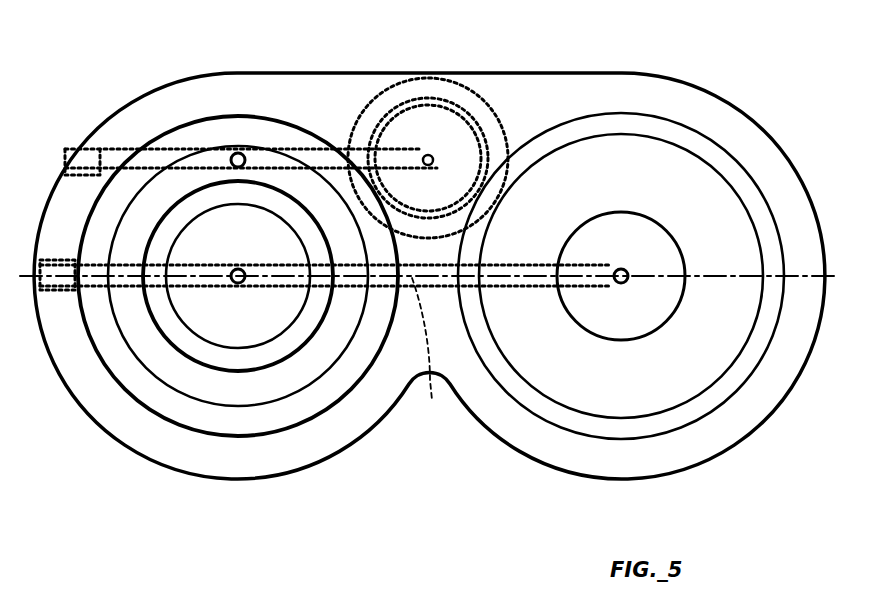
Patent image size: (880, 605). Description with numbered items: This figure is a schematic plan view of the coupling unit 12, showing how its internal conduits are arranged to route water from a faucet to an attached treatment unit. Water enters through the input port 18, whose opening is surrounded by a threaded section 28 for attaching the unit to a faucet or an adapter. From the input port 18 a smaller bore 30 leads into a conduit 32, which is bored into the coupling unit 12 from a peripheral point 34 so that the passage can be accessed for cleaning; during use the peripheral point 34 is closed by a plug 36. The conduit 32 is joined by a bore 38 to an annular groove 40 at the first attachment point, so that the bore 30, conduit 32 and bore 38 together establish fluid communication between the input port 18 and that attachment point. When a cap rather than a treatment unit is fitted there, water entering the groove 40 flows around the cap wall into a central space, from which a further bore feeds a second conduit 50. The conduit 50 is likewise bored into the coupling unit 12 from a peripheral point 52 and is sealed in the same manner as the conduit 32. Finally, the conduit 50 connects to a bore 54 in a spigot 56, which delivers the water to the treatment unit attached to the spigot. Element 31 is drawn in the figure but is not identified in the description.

The coupling unit 12 is at (653, 62).
The input port 18 is at (472, 83).
The threaded section 28 is at (407, 125).
The smaller bore 30 is at (440, 157).
The inlet passage 31 is at (72, 158).
The conduit 32 is at (328, 160).
The peripheral point 34 is at (100, 147).
The plug 36 is at (55, 290).
The bore 38 is at (246, 160).
The annular groove 40 is at (270, 385).
The conduit 50 is at (432, 400).
The peripheral point 52 is at (38, 264).
The bore 54 is at (625, 272).
The spigot 56 is at (655, 218).